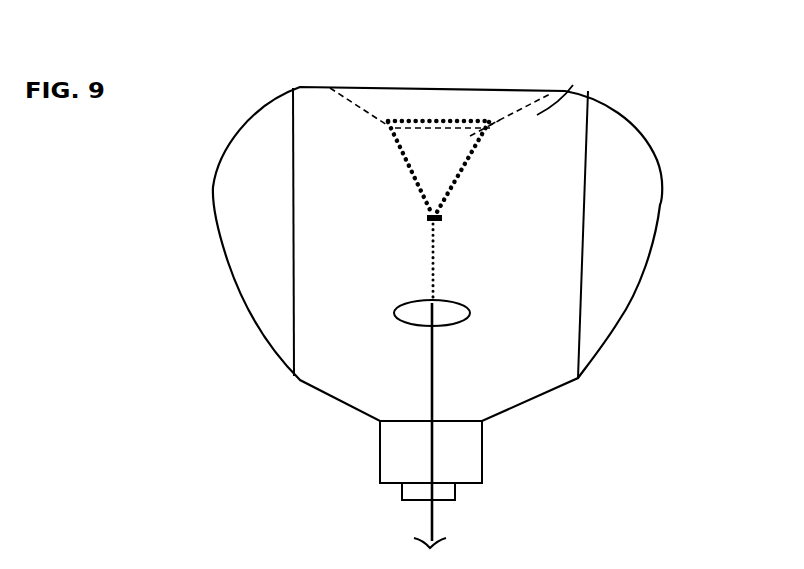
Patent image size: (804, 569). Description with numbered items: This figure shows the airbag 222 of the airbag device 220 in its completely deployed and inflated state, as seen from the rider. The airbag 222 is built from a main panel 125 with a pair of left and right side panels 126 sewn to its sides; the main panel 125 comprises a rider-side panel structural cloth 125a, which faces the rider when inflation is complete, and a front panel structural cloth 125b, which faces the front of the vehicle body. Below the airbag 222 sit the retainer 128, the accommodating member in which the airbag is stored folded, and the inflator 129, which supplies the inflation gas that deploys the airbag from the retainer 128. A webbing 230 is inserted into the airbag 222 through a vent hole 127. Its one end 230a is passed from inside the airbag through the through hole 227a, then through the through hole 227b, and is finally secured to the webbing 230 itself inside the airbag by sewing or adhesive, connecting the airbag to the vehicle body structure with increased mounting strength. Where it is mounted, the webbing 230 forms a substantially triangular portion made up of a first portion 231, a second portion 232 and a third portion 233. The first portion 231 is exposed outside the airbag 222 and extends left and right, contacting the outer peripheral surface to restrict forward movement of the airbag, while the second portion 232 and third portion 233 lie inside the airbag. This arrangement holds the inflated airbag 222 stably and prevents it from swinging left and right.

The airbag device 220 is at (662, 67).
The airbag 222 is at (653, 152).
The side panels 126 is at (253, 313).
The retainer 128 is at (487, 465).
The inflator 129 is at (457, 501).
The webbing 230 is at (422, 514).
The vent hole 127 is at (467, 318).
The one end of the webbing 230a is at (430, 237).
The second portion 232 is at (400, 160).
The third portion 233 is at (470, 166).
The first portion 231 is at (427, 117).
The through hole 227b is at (387, 122).
The through hole 227a is at (488, 125).
The main panel 125 is at (607, 51).
The front panel structural cloth 125b is at (498, 110).
The rider-side panel structural cloth 125a is at (572, 88).